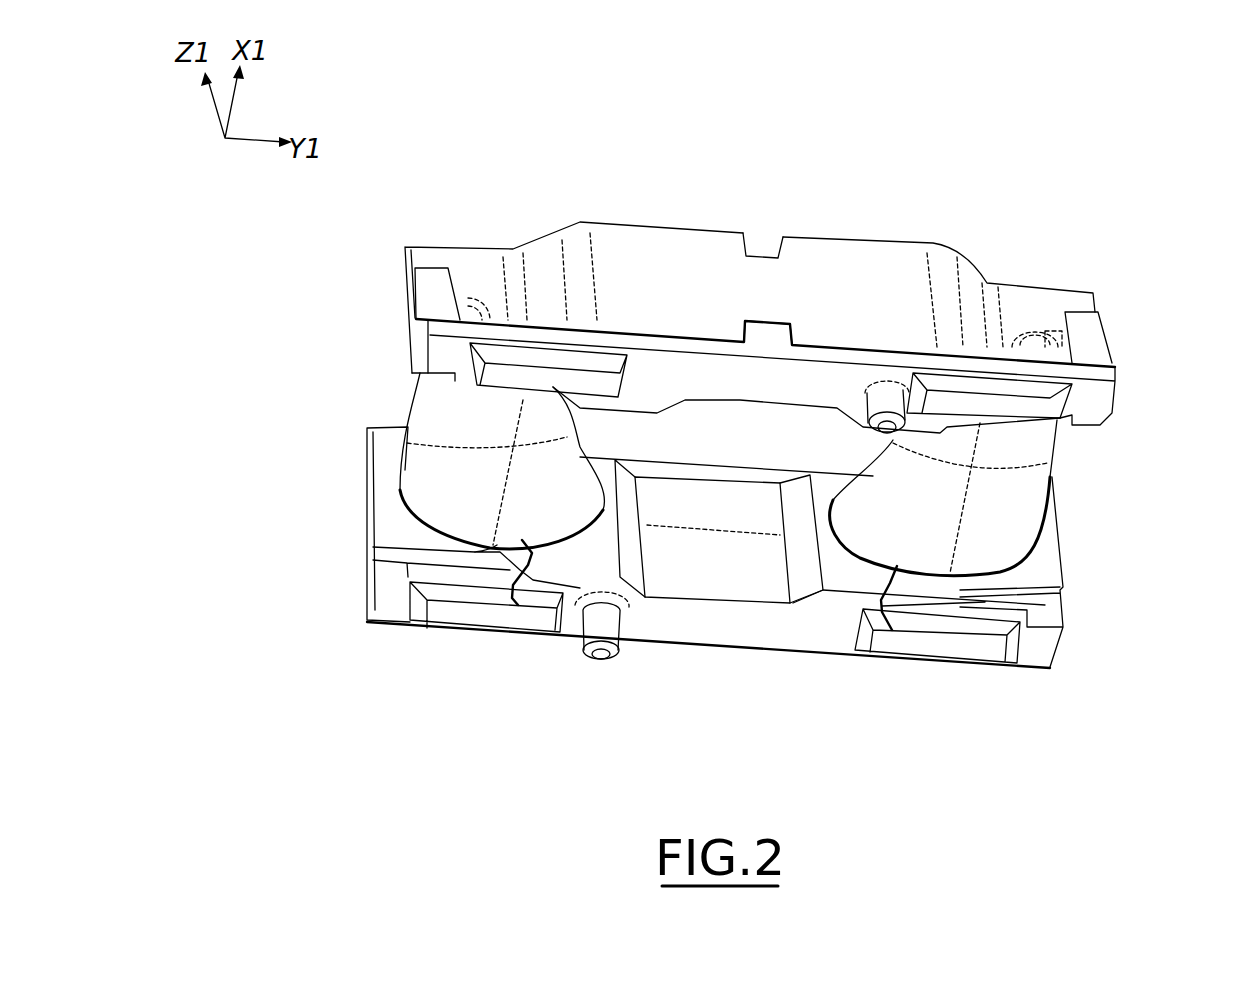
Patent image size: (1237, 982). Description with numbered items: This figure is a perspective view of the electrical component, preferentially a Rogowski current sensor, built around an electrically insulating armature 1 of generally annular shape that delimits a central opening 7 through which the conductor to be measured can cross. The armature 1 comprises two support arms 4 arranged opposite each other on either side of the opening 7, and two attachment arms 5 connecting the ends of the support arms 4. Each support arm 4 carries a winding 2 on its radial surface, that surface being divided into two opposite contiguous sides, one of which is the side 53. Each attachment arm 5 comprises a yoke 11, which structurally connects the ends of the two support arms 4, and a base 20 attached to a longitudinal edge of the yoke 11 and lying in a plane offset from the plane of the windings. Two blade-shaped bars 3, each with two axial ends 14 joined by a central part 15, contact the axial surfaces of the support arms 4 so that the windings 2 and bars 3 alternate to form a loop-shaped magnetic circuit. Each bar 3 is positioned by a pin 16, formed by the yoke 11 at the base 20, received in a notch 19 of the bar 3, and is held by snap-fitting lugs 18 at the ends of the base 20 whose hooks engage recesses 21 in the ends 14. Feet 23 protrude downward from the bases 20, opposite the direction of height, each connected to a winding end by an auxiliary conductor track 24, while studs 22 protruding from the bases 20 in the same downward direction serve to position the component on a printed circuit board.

The armature 1 is at (853, 346).
The winding 2 is at (433, 394).
The bar 3 is at (668, 250).
The support arm 4 is at (430, 445).
The attachment arm 5 is at (757, 580).
The opening 7 is at (778, 430).
The yoke 11 is at (693, 570).
The axial end 14 is at (541, 272).
The central part 15 is at (836, 265).
The pin 16 is at (768, 333).
The snap-fitting lug 18 is at (1095, 342).
The notch 19 is at (763, 240).
The base 20 is at (687, 367).
The recess 21 is at (1053, 346).
The stud 22 is at (885, 392).
The foot 23 is at (500, 372).
The auxiliary conductor track 24 is at (493, 602).
The side 53 is at (447, 489).